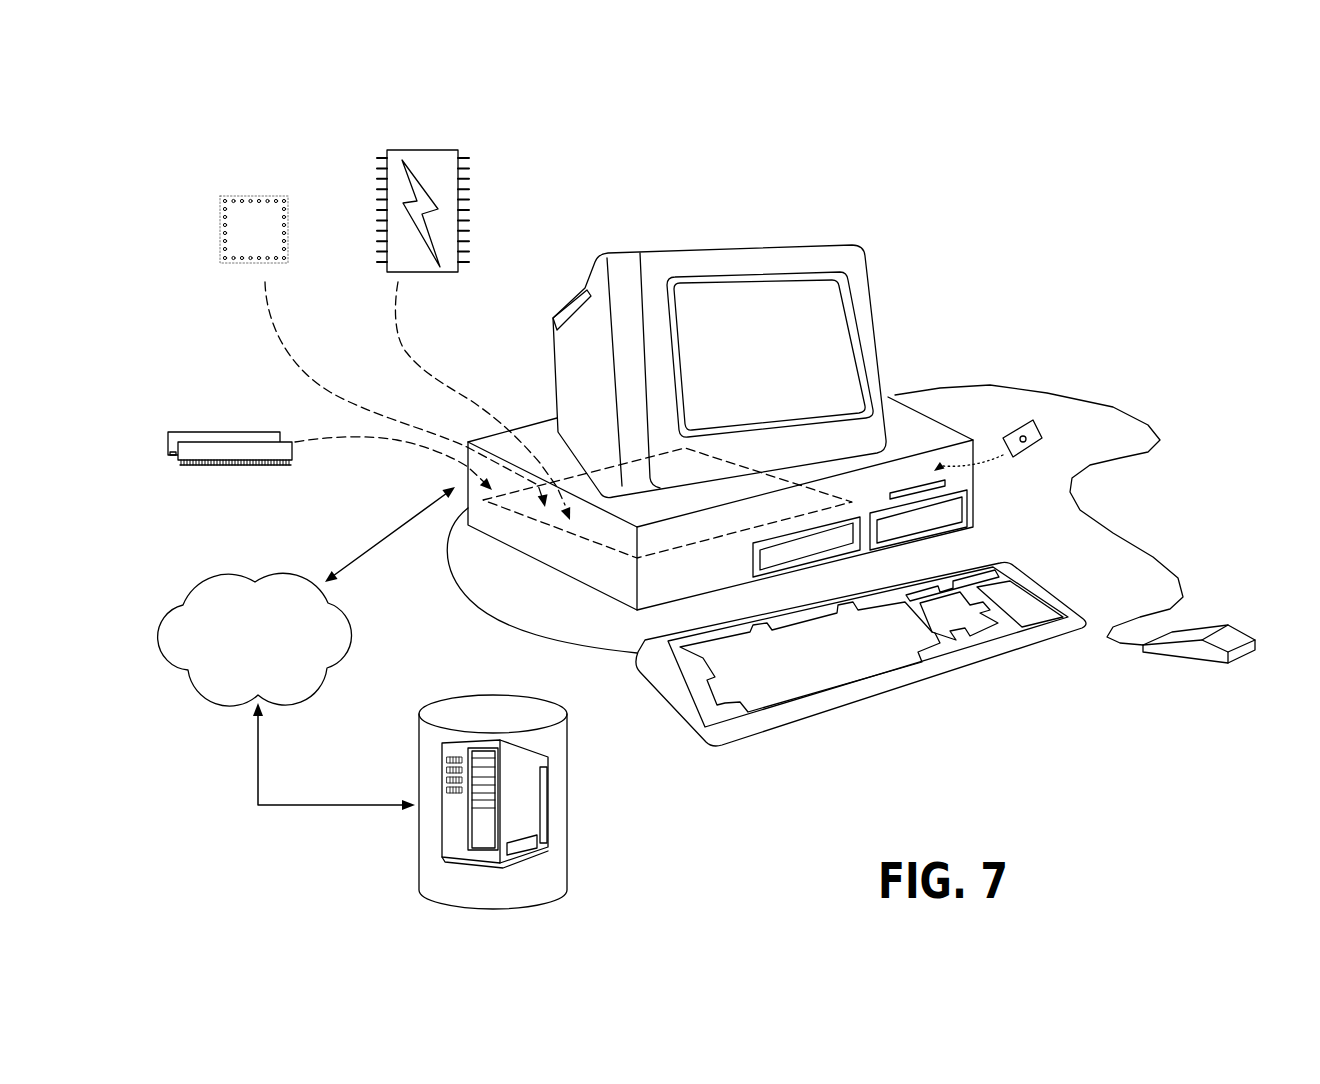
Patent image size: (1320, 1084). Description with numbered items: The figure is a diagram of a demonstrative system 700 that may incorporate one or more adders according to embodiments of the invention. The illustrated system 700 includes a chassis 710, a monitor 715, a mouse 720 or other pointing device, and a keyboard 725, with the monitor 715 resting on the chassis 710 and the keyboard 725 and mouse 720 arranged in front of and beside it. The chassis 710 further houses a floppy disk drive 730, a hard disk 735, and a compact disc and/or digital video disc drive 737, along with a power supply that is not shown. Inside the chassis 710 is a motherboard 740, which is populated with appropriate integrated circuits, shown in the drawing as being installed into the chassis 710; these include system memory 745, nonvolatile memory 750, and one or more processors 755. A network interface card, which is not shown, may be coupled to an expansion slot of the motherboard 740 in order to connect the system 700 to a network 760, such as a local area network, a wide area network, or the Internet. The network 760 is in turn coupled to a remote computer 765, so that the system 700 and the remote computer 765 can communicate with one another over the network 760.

The system 700 is at (1056, 166).
The chassis 710 is at (540, 418).
The monitor 715 is at (873, 280).
The mouse 720 is at (1193, 652).
The keyboard 725 is at (957, 668).
The floppy disk drive 730 is at (910, 487).
The hard disk 735 is at (968, 508).
The compact disc and/or digital video disc drive 737 is at (860, 553).
The motherboard 740 is at (552, 528).
The system memory 745 is at (195, 432).
The nonvolatile memory 750 is at (440, 148).
The processor 755 is at (292, 203).
The network 760 is at (268, 573).
The remote computer 765 is at (567, 843).